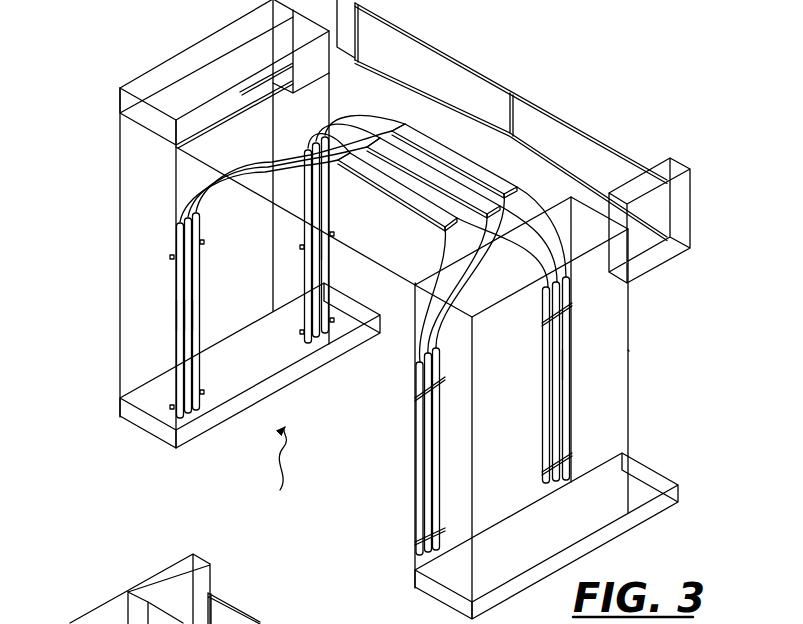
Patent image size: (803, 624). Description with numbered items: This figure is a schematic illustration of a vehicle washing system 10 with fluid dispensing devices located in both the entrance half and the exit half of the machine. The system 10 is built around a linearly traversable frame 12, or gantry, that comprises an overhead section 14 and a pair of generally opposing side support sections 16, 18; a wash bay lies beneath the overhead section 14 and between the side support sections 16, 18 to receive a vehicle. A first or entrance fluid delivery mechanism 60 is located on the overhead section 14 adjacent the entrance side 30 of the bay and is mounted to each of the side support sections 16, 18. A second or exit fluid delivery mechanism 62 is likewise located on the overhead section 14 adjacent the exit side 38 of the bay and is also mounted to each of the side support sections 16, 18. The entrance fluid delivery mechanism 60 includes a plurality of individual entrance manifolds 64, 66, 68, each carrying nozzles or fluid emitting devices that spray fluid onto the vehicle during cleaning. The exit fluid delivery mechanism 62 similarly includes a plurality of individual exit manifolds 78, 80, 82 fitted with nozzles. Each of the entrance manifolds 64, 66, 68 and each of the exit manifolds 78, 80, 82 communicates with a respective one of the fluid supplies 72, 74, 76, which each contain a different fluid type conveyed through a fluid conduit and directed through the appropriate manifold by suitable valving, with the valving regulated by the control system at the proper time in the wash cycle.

The vehicle washing system 10 is at (567, 80).
The frame 12 is at (628, 152).
The overhead section 14 is at (420, 115).
The side support section 16 is at (620, 430).
The side support section 18 is at (120, 378).
The entrance side 30 is at (274, 474).
The exit side 38 is at (652, 353).
The entrance fluid delivery mechanism 60 is at (175, 278).
The exit fluid delivery mechanism 62 is at (300, 240).
The entrance manifold 64 is at (178, 352).
The entrance manifold 66 is at (185, 325).
The entrance manifold 68 is at (202, 305).
The fluid supply 72 is at (422, 207).
The fluid supply 74 is at (455, 207).
The fluid supply 76 is at (452, 180).
The exit manifold 78 is at (423, 142).
The exit manifold 80 is at (318, 260).
The exit manifold 82 is at (327, 230).